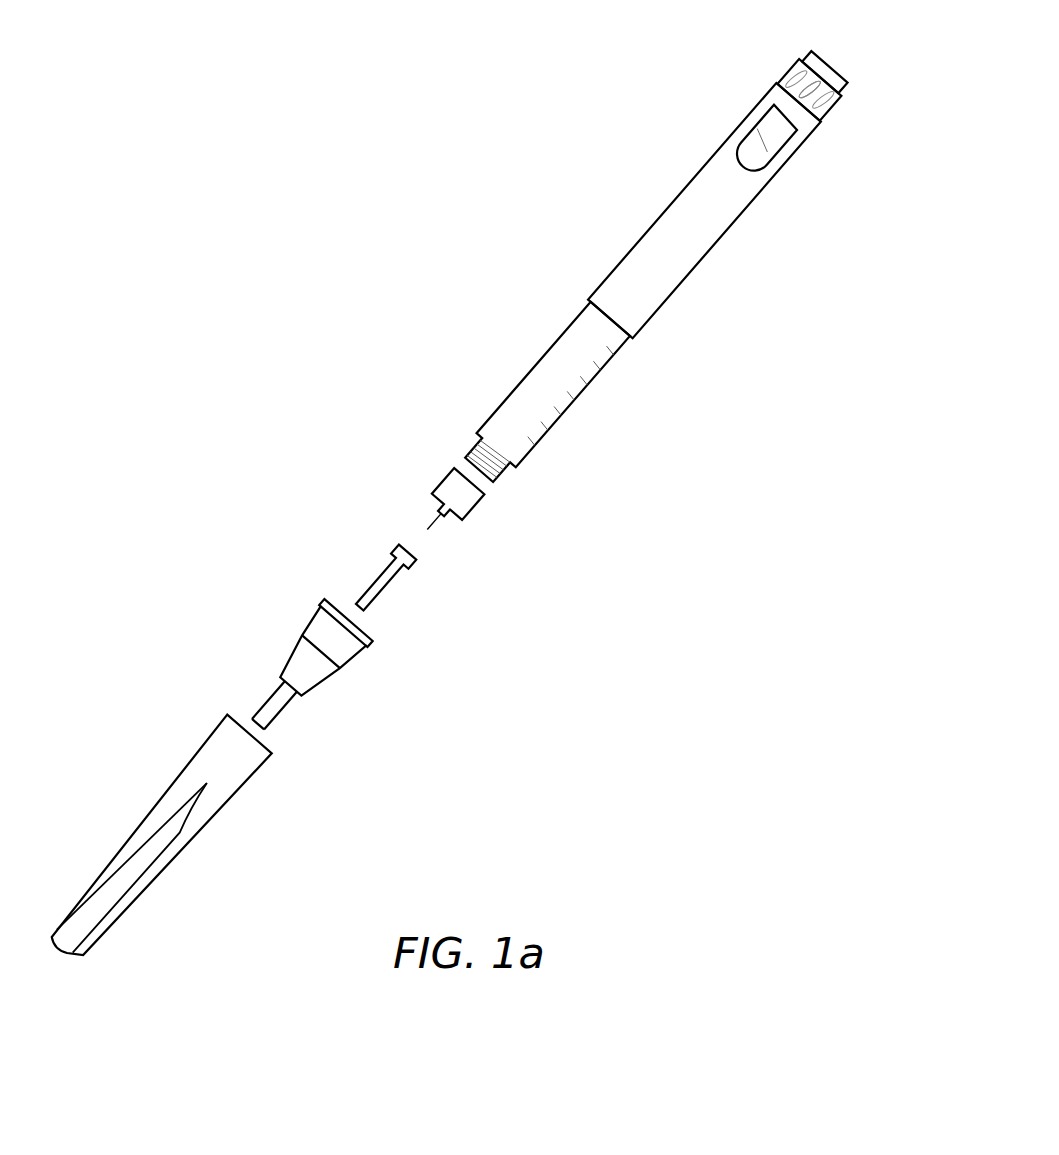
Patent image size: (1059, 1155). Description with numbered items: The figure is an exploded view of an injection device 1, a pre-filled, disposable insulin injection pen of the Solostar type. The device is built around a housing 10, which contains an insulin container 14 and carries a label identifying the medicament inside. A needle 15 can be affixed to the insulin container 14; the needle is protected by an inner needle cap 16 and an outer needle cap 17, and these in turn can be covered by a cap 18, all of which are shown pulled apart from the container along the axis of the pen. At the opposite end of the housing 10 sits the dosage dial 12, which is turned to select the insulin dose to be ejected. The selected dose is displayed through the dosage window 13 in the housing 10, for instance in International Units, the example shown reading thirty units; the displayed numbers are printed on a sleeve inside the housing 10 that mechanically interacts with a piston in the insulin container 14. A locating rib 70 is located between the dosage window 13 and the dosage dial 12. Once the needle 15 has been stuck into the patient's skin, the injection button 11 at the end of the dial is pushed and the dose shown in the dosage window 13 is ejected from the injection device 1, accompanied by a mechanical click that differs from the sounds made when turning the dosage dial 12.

The injection device 1 is at (518, 258).
The housing 10 is at (668, 218).
The injection button 11 is at (837, 59).
The dosage dial 12 is at (771, 69).
The dosage window 13 is at (745, 130).
The insulin container 14 is at (540, 372).
The needle 15 is at (447, 483).
The inner needle cap 16 is at (378, 580).
The outer needle cap 17 is at (315, 628).
The cap 18 is at (207, 747).
The locating rib 70 is at (797, 108).